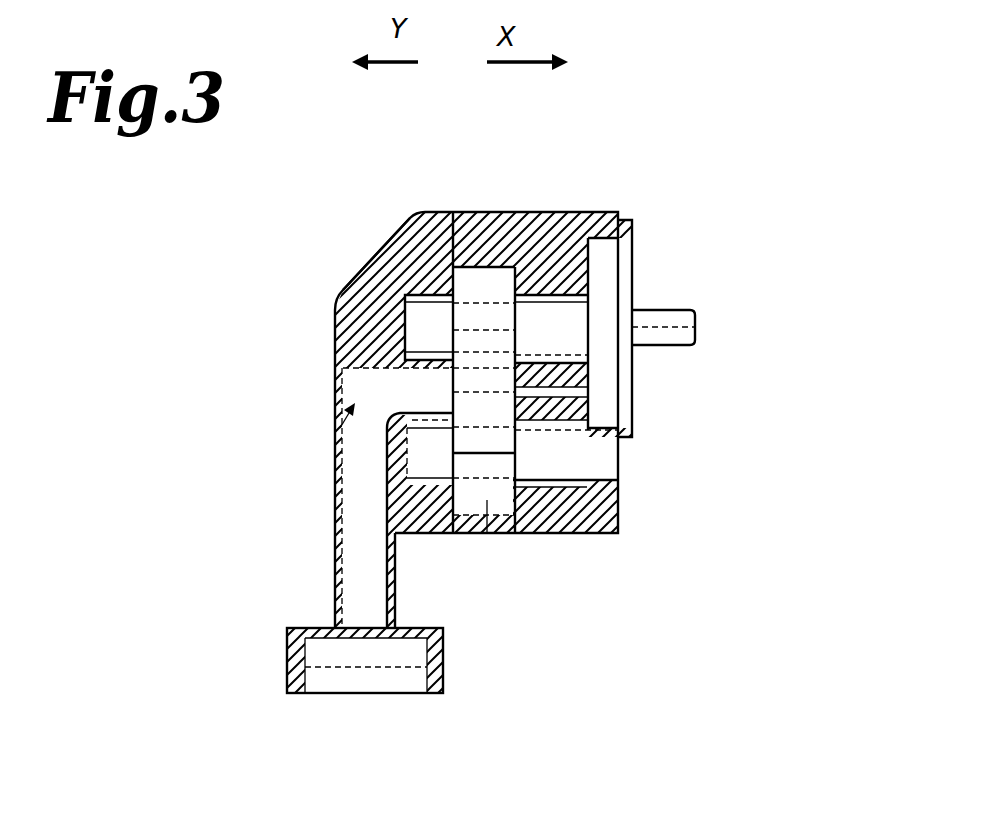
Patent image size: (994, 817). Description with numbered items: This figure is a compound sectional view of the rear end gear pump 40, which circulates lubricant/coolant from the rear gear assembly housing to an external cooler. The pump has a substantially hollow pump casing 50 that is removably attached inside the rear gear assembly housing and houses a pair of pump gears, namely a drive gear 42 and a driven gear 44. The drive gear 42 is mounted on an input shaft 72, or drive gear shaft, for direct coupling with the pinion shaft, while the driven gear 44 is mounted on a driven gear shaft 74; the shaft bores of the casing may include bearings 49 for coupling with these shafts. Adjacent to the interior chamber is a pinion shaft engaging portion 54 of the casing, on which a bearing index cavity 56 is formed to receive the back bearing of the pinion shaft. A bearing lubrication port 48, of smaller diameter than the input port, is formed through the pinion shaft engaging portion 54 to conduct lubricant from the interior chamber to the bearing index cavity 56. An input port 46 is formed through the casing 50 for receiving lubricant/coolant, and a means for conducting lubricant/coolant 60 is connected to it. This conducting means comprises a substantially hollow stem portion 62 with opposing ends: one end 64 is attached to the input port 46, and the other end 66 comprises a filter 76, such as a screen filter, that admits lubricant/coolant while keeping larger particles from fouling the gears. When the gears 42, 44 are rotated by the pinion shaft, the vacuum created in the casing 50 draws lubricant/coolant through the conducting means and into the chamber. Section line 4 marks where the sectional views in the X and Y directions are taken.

The section line 4— 4 is at (455, 192).
The rear end gear pump 40 is at (608, 126).
The drive gear 42 is at (483, 278).
The driven gear 44 is at (487, 533).
The input port 46 is at (384, 396).
The bearing lubrication port 48 is at (550, 375).
The bearings 49 is at (568, 262).
The pump casing 50 is at (357, 290).
The pinion shaft engaging portion 54 is at (593, 272).
The bearing index cavity 56 is at (593, 362).
The means for conducting lubricant/coolant 60 is at (330, 591).
The hollow stem portion 62 is at (360, 533).
The first opposing end 64 is at (337, 430).
The second opposing end 66 is at (272, 661).
The input shaft 72 is at (553, 315).
The driven gear shaft 74 is at (553, 455).
The filter 76 is at (352, 667).